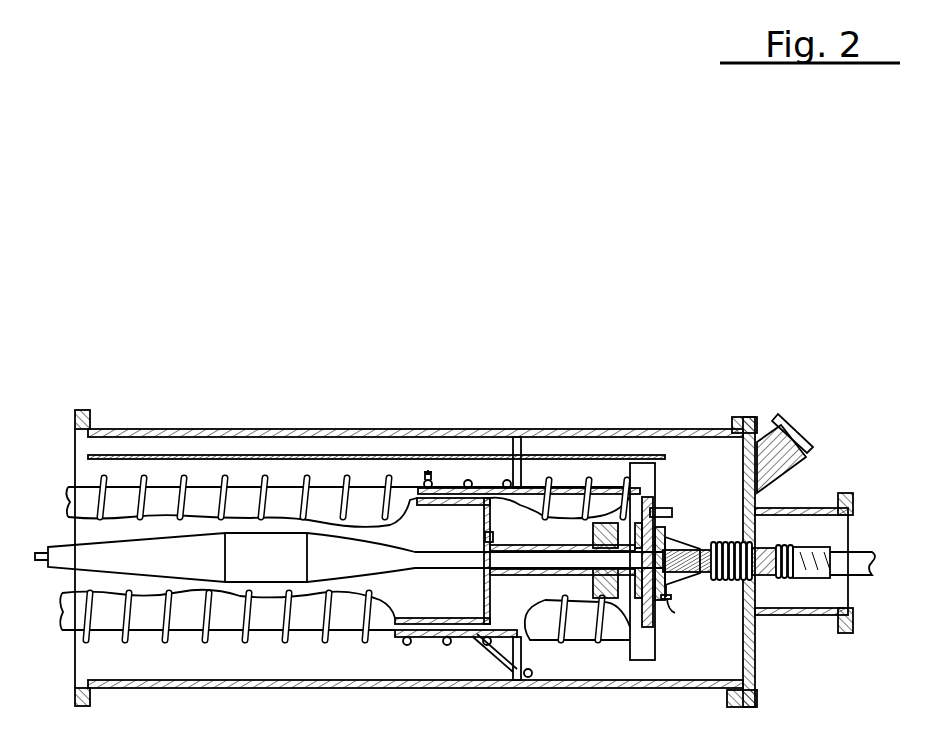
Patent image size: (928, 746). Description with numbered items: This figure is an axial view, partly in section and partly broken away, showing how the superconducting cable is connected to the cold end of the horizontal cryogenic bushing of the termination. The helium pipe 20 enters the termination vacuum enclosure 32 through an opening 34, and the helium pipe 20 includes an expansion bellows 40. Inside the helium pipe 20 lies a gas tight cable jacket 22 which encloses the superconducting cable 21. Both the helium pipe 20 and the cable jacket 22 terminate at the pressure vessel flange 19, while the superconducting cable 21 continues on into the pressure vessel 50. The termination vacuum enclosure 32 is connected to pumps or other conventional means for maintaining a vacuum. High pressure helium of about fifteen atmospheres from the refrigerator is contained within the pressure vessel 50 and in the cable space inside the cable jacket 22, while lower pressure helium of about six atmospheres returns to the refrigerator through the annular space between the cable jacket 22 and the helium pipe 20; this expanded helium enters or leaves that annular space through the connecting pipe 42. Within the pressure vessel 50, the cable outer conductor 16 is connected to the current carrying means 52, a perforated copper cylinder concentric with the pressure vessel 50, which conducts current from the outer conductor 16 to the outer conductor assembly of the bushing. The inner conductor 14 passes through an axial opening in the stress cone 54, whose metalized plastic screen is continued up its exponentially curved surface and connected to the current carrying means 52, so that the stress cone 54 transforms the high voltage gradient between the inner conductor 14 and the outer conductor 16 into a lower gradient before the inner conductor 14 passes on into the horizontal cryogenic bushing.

The inner conductor 14 is at (45, 547).
The outer conductor 16 is at (547, 547).
The pressure vessel flange 19 is at (657, 478).
The helium pipe 20 is at (847, 560).
The superconducting cable 21 is at (617, 562).
The cable jacket 22 is at (703, 573).
The termination vacuum enclosure 32 is at (647, 433).
The opening 34 is at (800, 533).
The expansion bellows 40 is at (753, 547).
The connecting pipe 42 is at (669, 607).
The pressure vessel 50 is at (227, 630).
The current carrying means 52 is at (422, 620).
The stress cone 54 is at (248, 533).